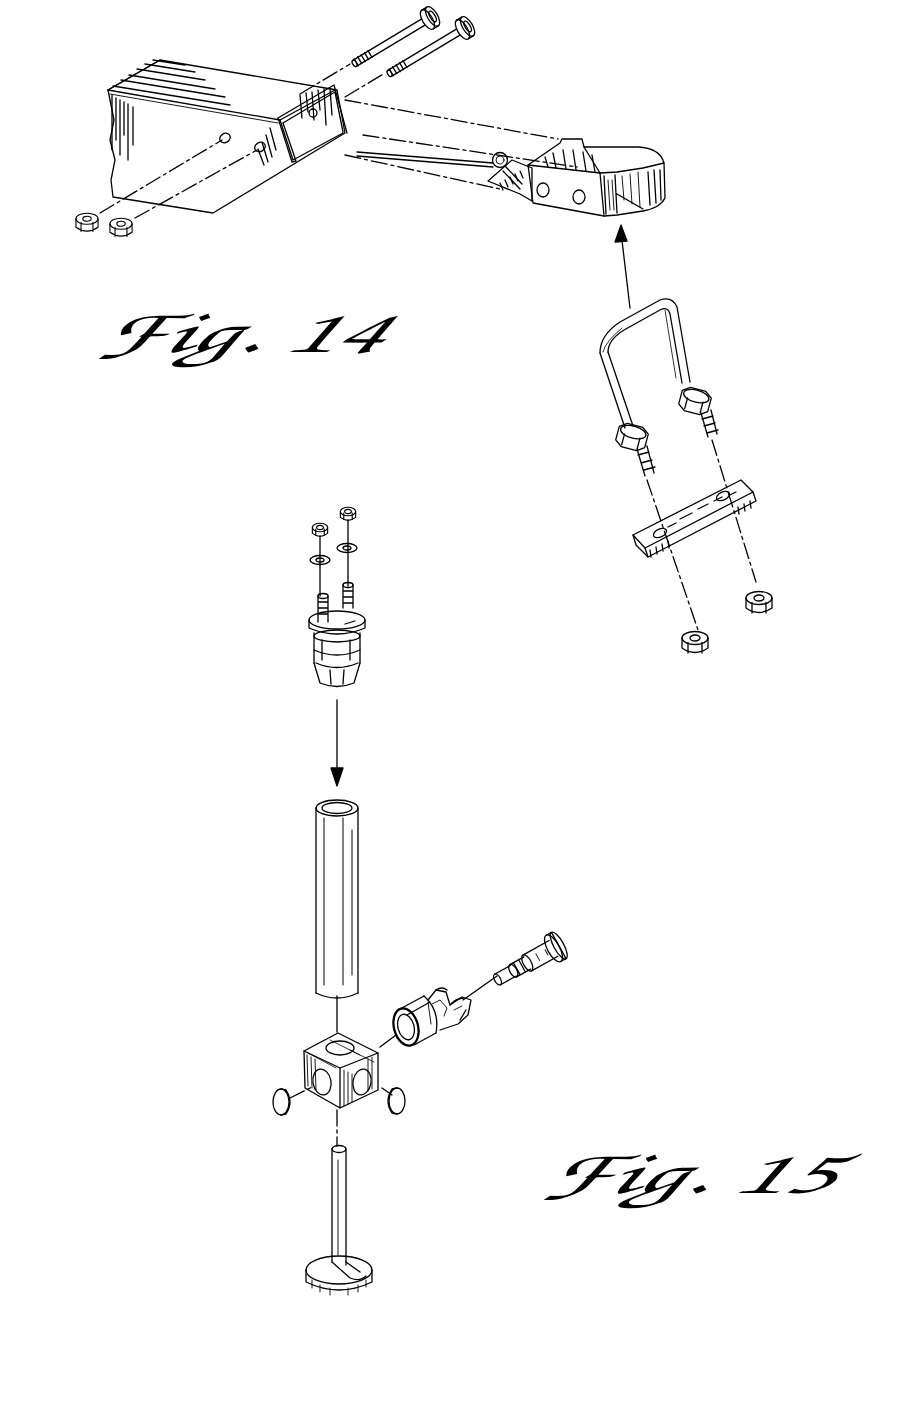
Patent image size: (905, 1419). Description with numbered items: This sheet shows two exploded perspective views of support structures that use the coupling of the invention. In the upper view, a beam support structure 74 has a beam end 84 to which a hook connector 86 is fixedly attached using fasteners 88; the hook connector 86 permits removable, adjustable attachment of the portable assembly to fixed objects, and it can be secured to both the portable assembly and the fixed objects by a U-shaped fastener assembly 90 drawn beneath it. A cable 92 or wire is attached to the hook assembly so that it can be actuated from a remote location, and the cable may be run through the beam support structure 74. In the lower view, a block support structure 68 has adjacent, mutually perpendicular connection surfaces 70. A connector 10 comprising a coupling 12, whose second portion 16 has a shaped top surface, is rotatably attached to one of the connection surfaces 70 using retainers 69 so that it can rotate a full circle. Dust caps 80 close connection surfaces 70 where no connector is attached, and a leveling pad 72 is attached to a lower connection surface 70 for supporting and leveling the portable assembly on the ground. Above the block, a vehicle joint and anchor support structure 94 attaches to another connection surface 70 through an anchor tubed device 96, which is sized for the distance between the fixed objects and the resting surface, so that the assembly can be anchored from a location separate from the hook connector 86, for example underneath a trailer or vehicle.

In FIG. 14, the beam support structure 74 is at (207, 80).
In FIG. 14, the beam end 84 is at (268, 97).
In FIG. 14, the fasteners 88 is at (440, 5).
In FIG. 14, the hook connector 86 is at (603, 157).
In FIG. 14, the cable 92 is at (430, 170).
In FIG. 14, the U-shaped fastener assembly 90 is at (772, 484).
In FIG. 15, the vehicle joint and anchor support structure 94 is at (372, 653).
In FIG. 15, the anchor tubed device 96 is at (360, 843).
In FIG. 15, the block support structure 68 is at (317, 1048).
In FIG. 15, the connection surfaces 70 is at (330, 1097).
In FIG. 15, the dust caps 80 is at (268, 1103).
In FIG. 15, the leveling pad 72 is at (340, 1227).
In FIG. 15, the connector 10 is at (406, 1000).
In FIG. 15, the second portion 16 is at (454, 995).
In FIG. 15, the coupling 12 is at (427, 1045).
In FIG. 15, the retainers 69 is at (543, 970).